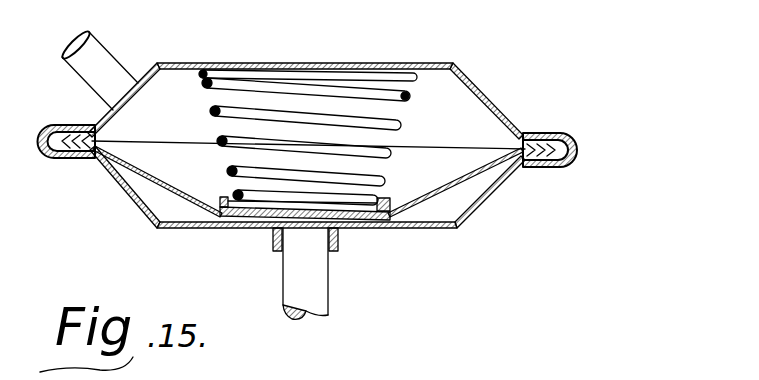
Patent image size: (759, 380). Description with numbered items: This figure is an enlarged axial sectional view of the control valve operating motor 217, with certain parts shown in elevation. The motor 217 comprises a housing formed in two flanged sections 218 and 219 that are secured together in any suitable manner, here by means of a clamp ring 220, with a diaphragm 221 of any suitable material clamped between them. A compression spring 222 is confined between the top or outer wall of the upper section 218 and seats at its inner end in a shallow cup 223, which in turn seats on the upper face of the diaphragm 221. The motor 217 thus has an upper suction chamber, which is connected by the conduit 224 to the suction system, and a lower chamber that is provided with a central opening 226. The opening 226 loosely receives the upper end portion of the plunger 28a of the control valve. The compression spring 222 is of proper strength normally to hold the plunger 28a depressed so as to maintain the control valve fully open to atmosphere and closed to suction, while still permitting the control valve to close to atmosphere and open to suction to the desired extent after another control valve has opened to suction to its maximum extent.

The motor 217 is at (228, 60).
The flanged housing section 218 is at (456, 65).
The flanged housing section 219 is at (453, 230).
The clamp ring 220 is at (575, 140).
The diaphragm 221 is at (140, 172).
The compression spring 222 is at (404, 92).
The shallow cup 223 is at (221, 199).
The conduit 224 is at (131, 30).
The central opening 226 is at (331, 230).
The plunger 28a is at (285, 300).